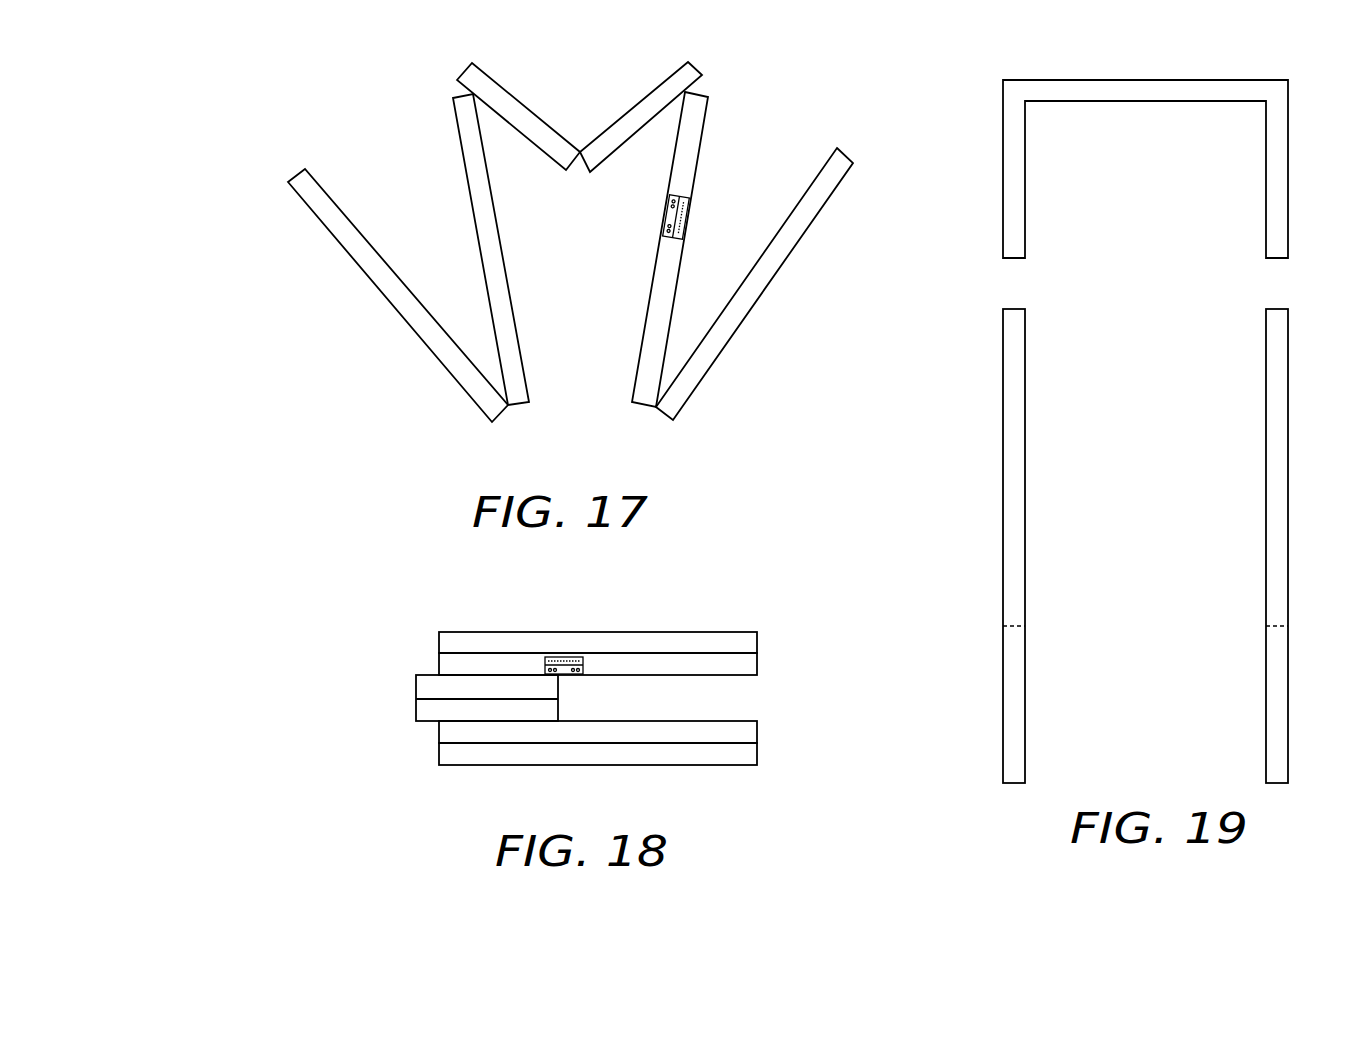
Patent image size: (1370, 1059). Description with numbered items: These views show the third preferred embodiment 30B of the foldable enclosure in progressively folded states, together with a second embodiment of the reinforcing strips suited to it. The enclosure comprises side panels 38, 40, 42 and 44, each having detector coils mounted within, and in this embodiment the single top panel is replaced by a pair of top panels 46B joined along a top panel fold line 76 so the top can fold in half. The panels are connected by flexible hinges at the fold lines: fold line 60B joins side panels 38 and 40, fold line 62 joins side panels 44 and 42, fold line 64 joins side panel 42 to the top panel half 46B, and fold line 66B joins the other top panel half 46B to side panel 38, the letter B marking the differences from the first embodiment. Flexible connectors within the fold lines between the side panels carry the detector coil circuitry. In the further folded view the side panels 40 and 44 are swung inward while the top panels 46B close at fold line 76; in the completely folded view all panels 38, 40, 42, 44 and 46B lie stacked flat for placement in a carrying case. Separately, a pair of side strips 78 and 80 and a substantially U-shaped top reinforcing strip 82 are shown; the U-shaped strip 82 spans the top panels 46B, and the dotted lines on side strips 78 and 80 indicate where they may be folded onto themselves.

In FIG. 17, the third preferred embodiment 30B is at (482, 19).
In FIG. 18, the third preferred embodiment 30B is at (428, 612).
In FIG. 17, the side panel 38 is at (470, 160).
In FIG. 18, the side panel 38 is at (748, 727).
In FIG. 17, the side panel 40 is at (392, 292).
In FIG. 18, the side panel 40 is at (448, 756).
In FIG. 17, the side panel 42 is at (666, 292).
In FIG. 18, the side panel 42 is at (438, 674).
In FIG. 17, the side panel 44 is at (731, 325).
In FIG. 18, the side panel 44 is at (748, 637).
In FIG. 17, the top panel 46B is at (480, 80).
In FIG. 18, the top panel 46B is at (422, 720).
In FIG. 17, the fold line 60B is at (509, 408).
In FIG. 17, the fold line 62 is at (656, 408).
In FIG. 17, the fold line 64 is at (688, 92).
In FIG. 17, the fold line 66B is at (470, 93).
In FIG. 17, the top panel fold line 76 is at (590, 172).
In FIG. 19, the side strip 78 is at (1006, 497).
In FIG. 19, the side strip 80 is at (1283, 485).
In FIG. 19, the U-shaped top reinforcing strip 82 is at (1130, 88).